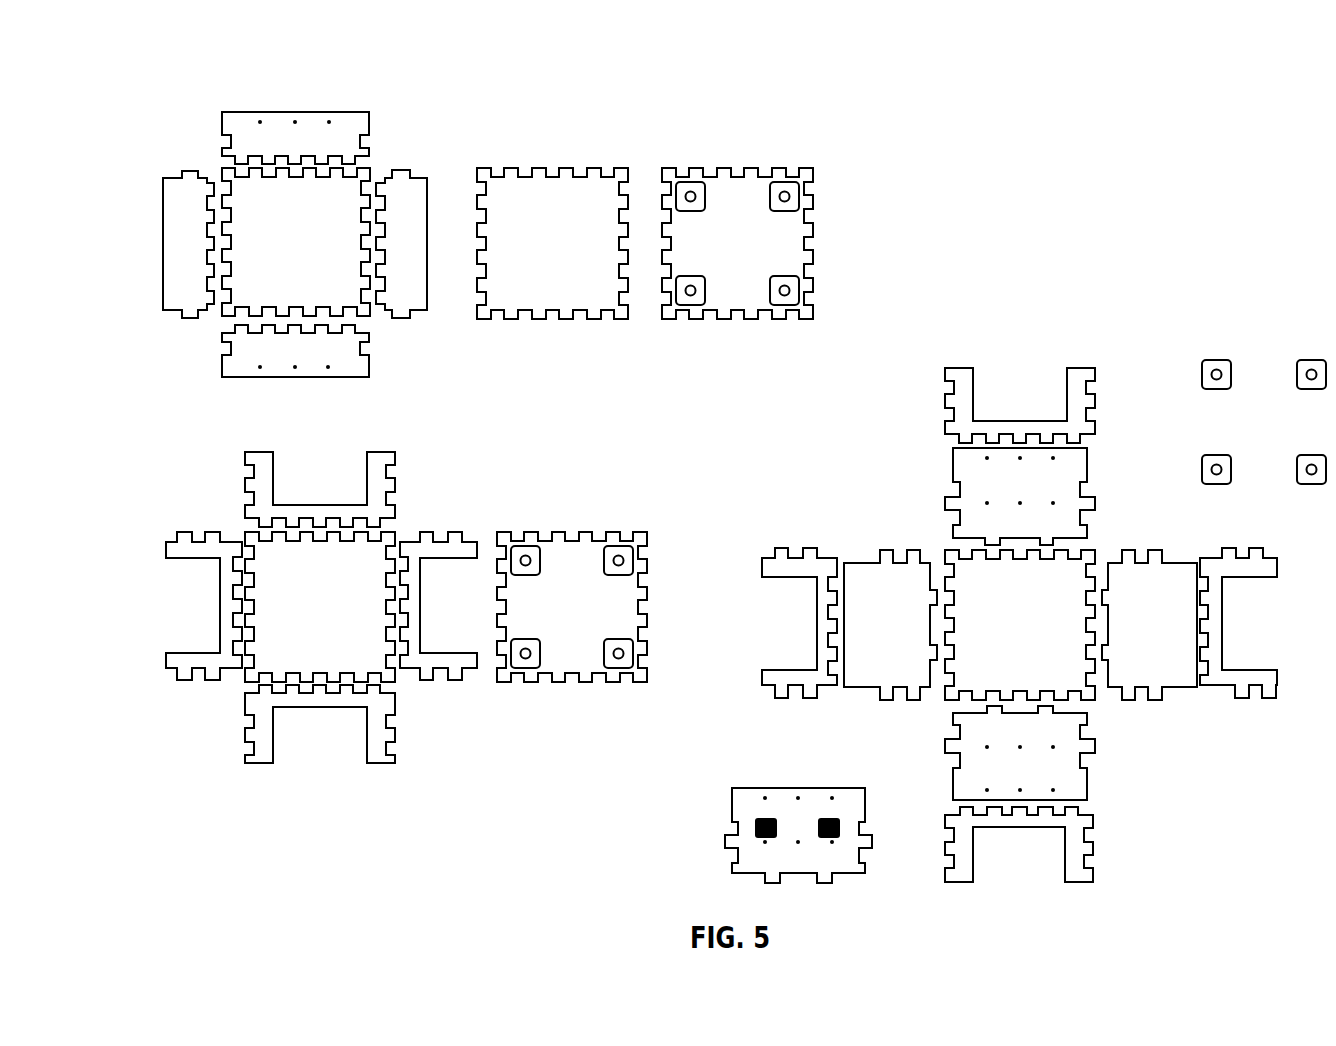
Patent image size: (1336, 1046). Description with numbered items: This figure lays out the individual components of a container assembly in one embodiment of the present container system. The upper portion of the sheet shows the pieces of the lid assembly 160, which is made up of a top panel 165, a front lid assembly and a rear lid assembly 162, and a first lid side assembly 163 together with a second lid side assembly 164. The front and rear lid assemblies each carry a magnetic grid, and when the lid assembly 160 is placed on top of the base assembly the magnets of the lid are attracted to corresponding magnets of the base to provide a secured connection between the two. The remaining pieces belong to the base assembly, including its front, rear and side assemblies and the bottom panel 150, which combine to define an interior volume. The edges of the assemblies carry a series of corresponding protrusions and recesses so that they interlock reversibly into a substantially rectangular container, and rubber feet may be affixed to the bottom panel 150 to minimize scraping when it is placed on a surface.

The bottom panel 150 is at (1062, 682).
The lid assembly 160 is at (152, 80).
The rear lid assembly 162 is at (226, 357).
The first lid side assembly 163 is at (341, 138).
The second lid side assembly 164 is at (175, 186).
The top panel 165 is at (411, 180).